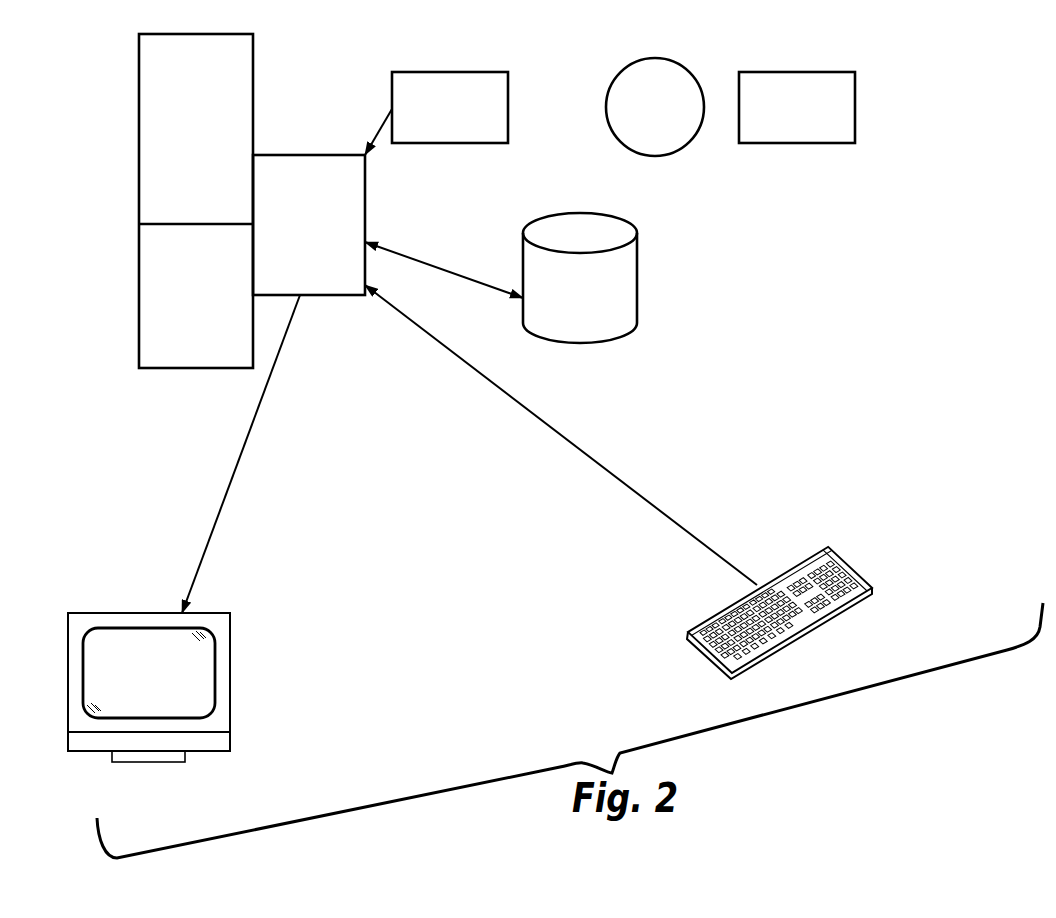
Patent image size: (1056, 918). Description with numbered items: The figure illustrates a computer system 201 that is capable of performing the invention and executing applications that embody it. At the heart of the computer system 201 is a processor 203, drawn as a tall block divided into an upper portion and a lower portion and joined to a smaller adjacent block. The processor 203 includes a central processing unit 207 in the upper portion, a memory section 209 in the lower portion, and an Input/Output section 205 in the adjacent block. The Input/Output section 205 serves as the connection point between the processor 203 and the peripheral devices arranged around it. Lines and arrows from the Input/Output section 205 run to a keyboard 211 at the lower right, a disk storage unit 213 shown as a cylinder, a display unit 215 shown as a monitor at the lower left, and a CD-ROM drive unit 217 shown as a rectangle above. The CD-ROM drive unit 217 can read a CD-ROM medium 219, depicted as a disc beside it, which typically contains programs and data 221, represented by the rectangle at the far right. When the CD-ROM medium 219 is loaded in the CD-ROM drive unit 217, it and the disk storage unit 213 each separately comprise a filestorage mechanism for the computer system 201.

The computer system 201 is at (205, 280).
The processor 203 is at (159, 201).
The Input/Output section 205 is at (345, 185).
The central processing unit 207 is at (232, 84).
The memory section 209 is at (186, 355).
The keyboard 211 is at (860, 572).
The disk storage unit 213 is at (637, 280).
The display unit 215 is at (230, 685).
The CD-ROM drive unit 217 is at (475, 143).
The CD-ROM medium 219 is at (657, 143).
The programs and data 221 is at (813, 130).